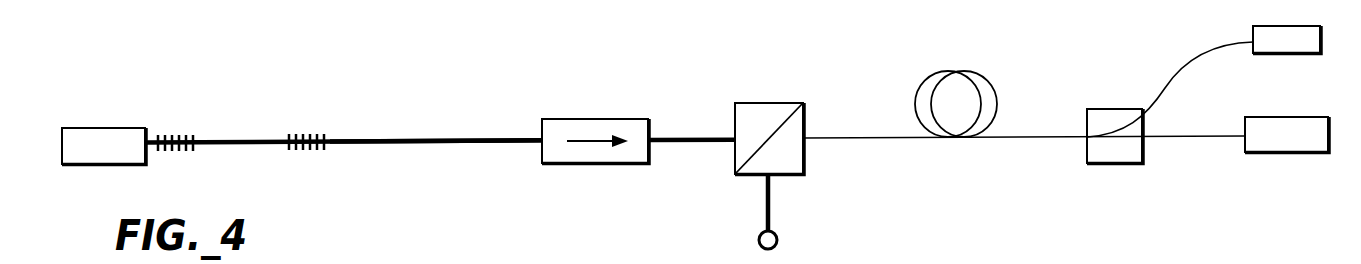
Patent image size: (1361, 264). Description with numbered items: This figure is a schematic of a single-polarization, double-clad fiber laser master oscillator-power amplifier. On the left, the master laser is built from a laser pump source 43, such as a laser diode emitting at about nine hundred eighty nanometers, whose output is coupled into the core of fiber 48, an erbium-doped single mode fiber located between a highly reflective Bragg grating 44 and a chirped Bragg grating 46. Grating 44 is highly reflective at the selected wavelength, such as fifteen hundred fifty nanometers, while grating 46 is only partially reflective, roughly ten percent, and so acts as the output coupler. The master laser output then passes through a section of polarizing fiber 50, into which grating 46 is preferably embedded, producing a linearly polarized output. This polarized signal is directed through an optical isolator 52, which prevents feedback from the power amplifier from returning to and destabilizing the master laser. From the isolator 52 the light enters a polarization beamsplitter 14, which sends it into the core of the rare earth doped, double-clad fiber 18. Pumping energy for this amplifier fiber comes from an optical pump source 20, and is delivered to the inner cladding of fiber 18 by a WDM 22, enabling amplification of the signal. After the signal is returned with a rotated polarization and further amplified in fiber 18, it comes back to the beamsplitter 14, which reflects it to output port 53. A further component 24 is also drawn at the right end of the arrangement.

The polarization beamsplitter 14 is at (757, 103).
The rare earth doped double-clad fiber 18 is at (968, 70).
The optical pump source 20 is at (1298, 54).
The WDM 22 is at (1117, 108).
The detector 24 is at (1268, 118).
The laser pump source 43 is at (95, 128).
The highly reflective Bragg grating 44 is at (177, 138).
The chirped Bragg grating 46 is at (302, 137).
The fiber 48 is at (238, 148).
The polarizing fiber 50 is at (392, 140).
The optical isolator 52 is at (575, 119).
The output port 53 is at (778, 238).